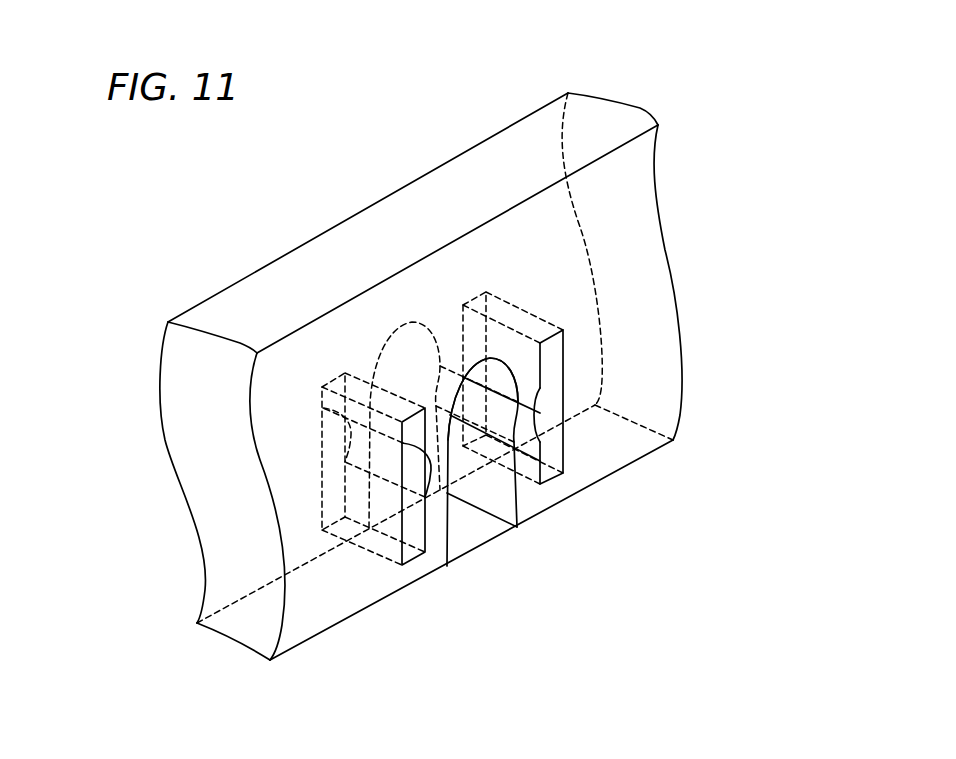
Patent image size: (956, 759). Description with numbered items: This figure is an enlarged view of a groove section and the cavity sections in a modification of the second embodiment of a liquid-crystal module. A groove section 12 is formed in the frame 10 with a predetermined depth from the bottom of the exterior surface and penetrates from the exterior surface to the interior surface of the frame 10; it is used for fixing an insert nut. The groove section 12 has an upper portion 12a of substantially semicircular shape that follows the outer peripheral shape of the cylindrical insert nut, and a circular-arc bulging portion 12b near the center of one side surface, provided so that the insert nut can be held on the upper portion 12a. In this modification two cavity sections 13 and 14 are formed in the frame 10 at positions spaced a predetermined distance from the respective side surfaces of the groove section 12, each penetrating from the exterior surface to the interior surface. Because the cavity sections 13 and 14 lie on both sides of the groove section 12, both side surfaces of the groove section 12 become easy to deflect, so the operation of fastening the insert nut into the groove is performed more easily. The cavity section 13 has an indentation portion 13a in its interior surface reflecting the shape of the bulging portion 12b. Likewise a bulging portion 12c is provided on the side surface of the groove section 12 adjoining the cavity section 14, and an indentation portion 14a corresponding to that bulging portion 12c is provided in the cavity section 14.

The frame 10 is at (622, 243).
The groove section 12 is at (472, 522).
The upper portion 12a is at (602, 405).
The bulging portion 12b is at (540, 433).
The bulging portion 12c is at (473, 467).
The cavity section 13 is at (565, 351).
The indentation portion 13a is at (497, 420).
The cavity section 14 is at (410, 522).
The indentation portion 14a is at (415, 478).